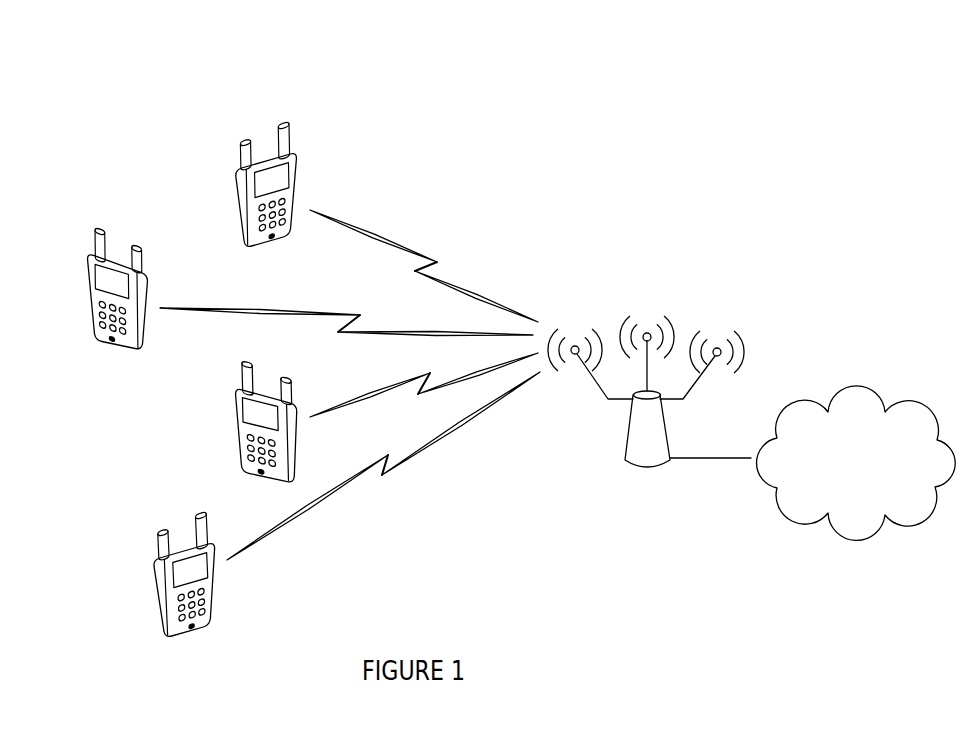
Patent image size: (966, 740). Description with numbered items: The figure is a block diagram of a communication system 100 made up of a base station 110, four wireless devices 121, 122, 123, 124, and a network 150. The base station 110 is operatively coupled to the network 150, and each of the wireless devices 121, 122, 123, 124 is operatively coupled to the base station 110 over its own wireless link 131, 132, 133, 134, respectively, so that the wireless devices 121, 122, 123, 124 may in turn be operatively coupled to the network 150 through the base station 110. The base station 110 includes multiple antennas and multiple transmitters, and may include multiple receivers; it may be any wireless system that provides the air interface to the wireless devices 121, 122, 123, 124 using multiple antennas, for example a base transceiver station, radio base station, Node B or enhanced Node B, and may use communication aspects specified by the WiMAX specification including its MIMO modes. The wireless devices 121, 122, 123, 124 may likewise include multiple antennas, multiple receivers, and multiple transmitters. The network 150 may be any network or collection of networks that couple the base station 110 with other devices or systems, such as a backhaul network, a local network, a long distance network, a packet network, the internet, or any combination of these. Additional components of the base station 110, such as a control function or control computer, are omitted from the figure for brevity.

The communication system 100 is at (557, 60).
The base station 110 is at (640, 468).
The wireless device 121 is at (248, 252).
The wireless device 122 is at (270, 487).
The wireless device 123 is at (135, 353).
The wireless device 124 is at (203, 630).
The wireless link 131 is at (488, 300).
The wireless link 132 is at (470, 373).
The wireless link 133 is at (458, 333).
The wireless link 134 is at (440, 432).
The network 150 is at (879, 484).